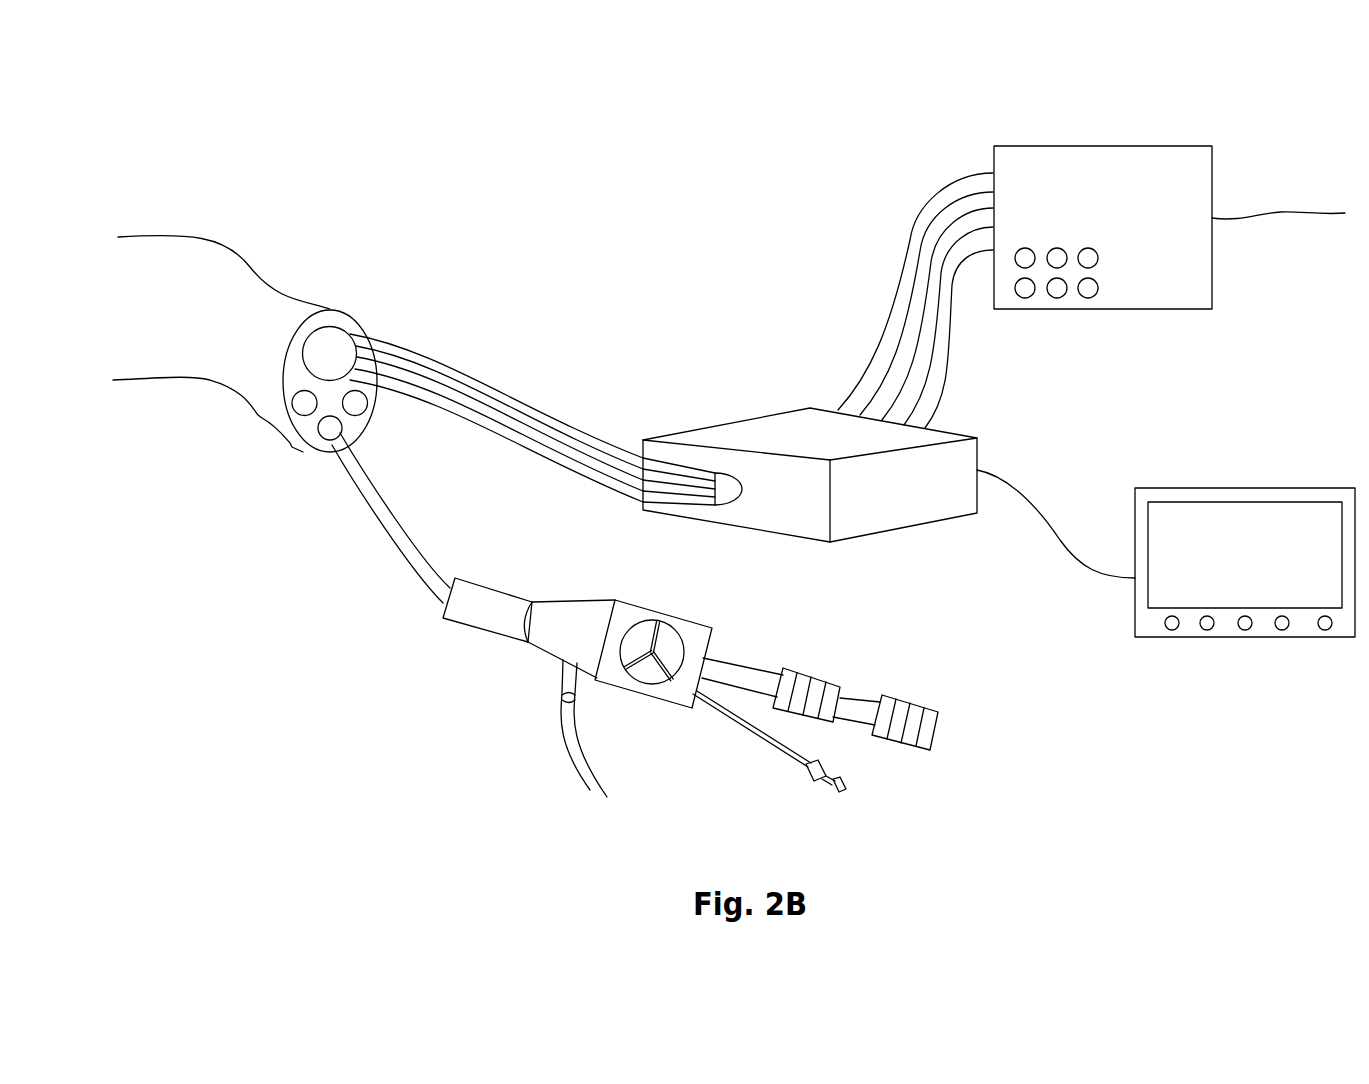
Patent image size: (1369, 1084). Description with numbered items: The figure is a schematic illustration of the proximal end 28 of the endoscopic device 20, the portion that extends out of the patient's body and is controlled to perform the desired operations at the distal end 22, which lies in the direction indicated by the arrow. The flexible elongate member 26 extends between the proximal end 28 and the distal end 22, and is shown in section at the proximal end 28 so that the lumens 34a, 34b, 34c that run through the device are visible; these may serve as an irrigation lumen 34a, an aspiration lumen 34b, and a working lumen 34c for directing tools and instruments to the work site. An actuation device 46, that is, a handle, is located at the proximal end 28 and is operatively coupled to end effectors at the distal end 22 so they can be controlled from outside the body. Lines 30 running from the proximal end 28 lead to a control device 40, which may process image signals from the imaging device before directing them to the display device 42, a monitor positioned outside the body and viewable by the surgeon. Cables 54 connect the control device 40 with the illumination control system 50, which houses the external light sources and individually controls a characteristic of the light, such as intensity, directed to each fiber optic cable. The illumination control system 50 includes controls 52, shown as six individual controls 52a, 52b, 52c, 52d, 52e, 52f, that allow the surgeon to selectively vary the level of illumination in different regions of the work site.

The endoscopic device 20 is at (243, 233).
The distal end 22 is at (57, 109).
The flexible elongate member 26 is at (142, 247).
The proximal end 28 is at (355, 295).
The sensor cable 30 is at (546, 419).
The irrigation lumen 34a is at (303, 403).
The aspiration lumen 34b is at (352, 413).
The working lumen 34c is at (328, 432).
The control device 40 is at (858, 510).
The display device 42 is at (1143, 625).
The actuation device 46 is at (480, 652).
The illumination control system 50 is at (1105, 162).
The controls 52 is at (1057, 346).
The control 52a is at (1018, 266).
The control 52b is at (1063, 262).
The control 52c is at (1025, 298).
The control 52d is at (1057, 298).
The control 52e is at (1093, 262).
The control 52f is at (1077, 308).
The cables to controller 54 is at (915, 300).